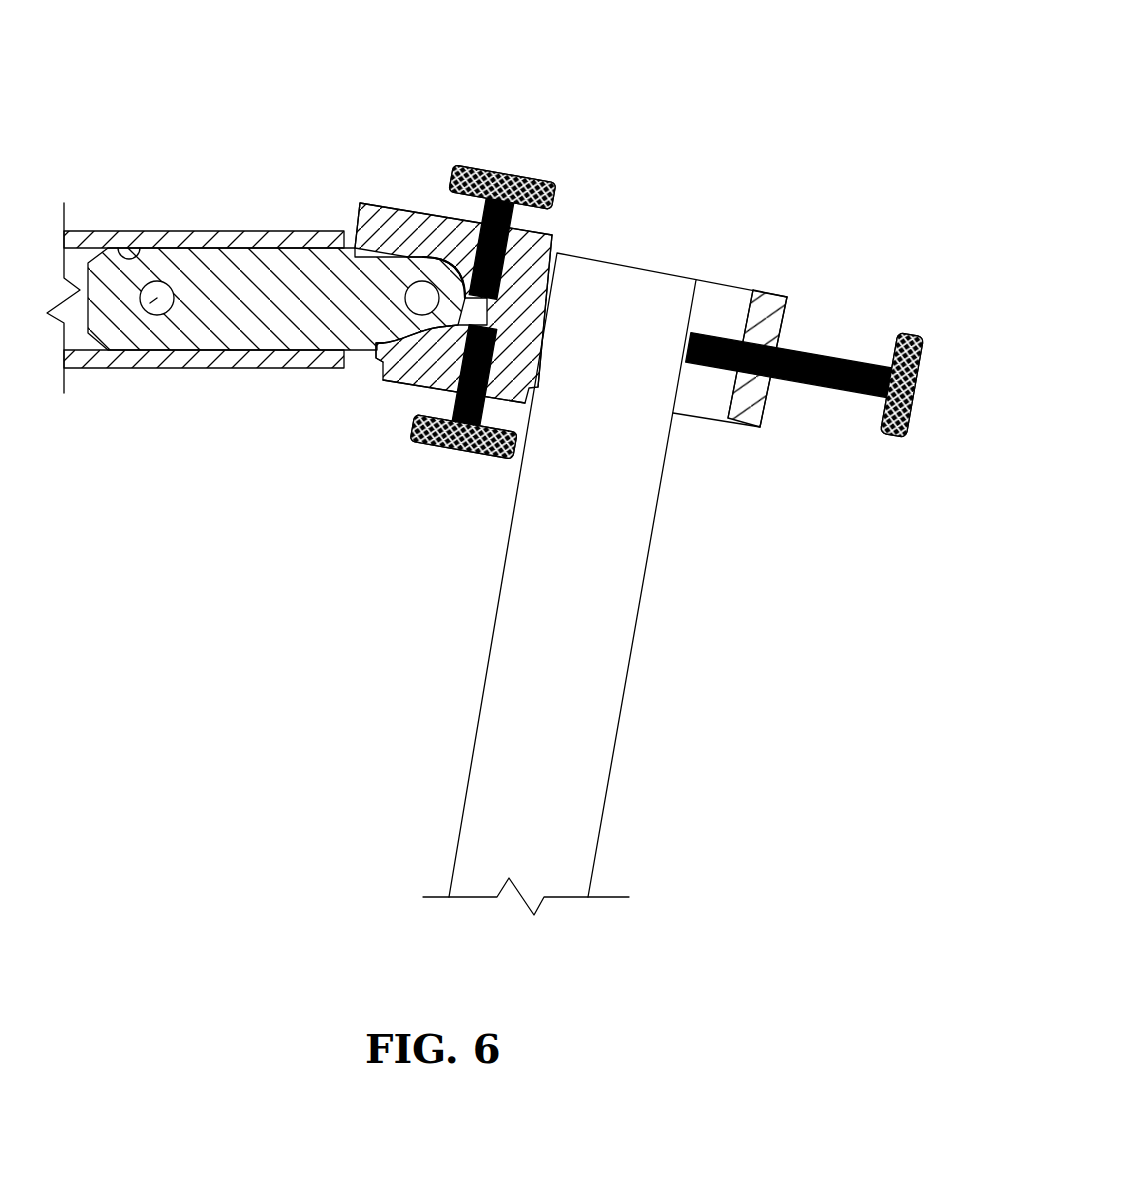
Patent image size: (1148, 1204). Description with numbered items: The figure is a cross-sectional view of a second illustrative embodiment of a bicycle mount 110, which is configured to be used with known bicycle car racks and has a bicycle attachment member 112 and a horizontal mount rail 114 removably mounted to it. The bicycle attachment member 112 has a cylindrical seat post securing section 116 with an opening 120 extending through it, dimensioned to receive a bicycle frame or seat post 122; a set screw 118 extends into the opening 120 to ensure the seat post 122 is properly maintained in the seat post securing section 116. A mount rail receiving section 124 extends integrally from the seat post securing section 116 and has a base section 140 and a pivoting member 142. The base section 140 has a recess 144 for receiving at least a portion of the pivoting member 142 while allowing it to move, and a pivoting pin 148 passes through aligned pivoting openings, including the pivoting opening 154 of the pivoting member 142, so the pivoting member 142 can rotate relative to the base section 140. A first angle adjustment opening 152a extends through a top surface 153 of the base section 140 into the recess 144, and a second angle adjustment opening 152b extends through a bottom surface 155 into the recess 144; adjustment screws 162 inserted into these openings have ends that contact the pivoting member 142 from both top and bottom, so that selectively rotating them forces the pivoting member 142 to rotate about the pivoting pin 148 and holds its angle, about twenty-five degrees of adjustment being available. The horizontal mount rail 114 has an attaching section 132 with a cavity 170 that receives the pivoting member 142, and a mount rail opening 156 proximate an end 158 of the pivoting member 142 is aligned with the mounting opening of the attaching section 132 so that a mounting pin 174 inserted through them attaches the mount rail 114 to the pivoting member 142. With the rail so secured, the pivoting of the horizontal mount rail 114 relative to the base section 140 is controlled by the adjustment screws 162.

The bicycle mount 110 is at (655, 90).
The bicycle attachment member 112 is at (793, 266).
The horizontal mount rail 114 is at (223, 200).
The seat post securing section 116 is at (747, 428).
The set screw 118 is at (917, 355).
The opening 120 is at (727, 302).
The seat post 122 is at (602, 720).
The mount rail receiving section 124 is at (553, 233).
The attaching section 132 is at (222, 368).
The base section 140 is at (440, 385).
The pivoting member 142 is at (335, 323).
The recess 144 is at (380, 352).
The pivoting pin 148 is at (392, 300).
The first angle adjustment opening 152a is at (553, 258).
The second angle adjustment opening 152b is at (540, 373).
The top surface 153 is at (428, 213).
The pivoting opening 154 is at (420, 303).
The bottom surface 155 is at (521, 402).
The mount rail opening 156 is at (153, 317).
The end 158 is at (97, 258).
The adjustment screws 162 is at (533, 173).
The cavity 170 is at (120, 247).
The mounting pin 174 is at (150, 303).